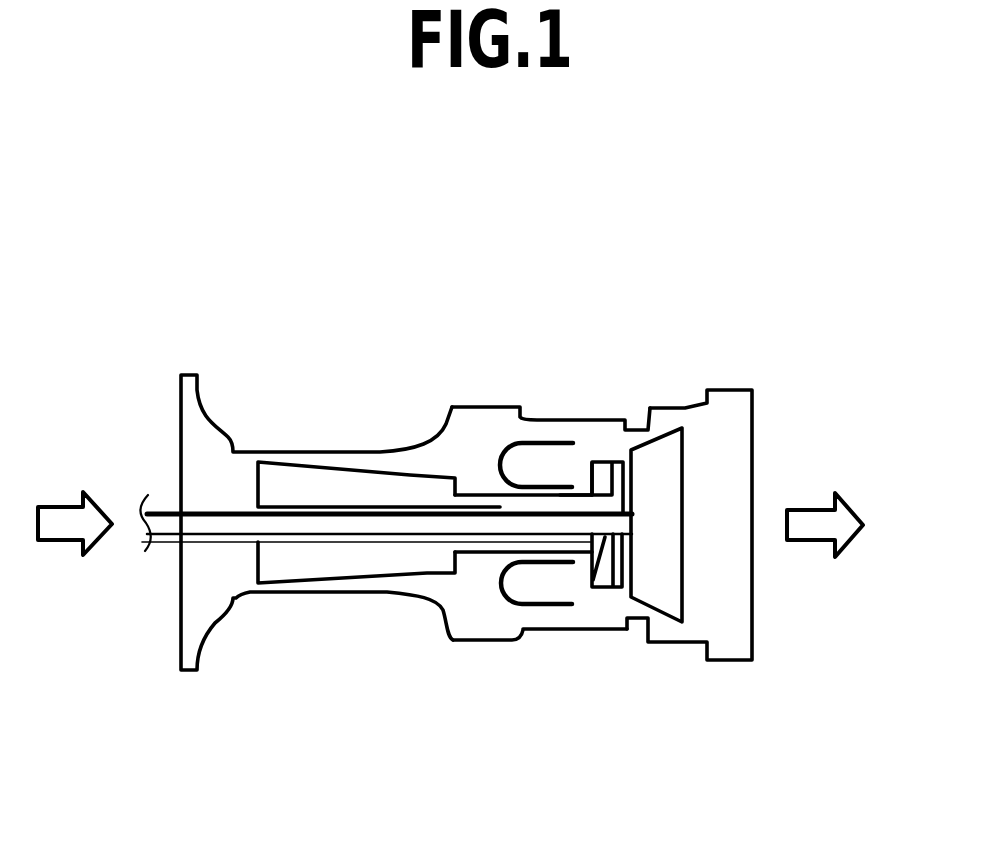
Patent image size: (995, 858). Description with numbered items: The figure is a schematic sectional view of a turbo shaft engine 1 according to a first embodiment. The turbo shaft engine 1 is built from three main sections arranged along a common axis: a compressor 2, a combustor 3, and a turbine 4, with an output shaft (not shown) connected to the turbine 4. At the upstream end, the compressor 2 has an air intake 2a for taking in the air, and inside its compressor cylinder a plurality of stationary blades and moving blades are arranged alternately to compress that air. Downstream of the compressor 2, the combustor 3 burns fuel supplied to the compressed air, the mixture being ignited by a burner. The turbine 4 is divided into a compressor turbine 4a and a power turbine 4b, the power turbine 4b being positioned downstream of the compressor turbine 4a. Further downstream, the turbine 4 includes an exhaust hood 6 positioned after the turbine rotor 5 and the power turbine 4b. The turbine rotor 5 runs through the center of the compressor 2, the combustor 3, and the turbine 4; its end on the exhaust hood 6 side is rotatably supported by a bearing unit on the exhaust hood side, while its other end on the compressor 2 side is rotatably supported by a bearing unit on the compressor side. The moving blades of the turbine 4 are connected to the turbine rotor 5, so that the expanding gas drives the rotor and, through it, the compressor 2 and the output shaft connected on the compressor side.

The turbo shaft engine 1 is at (443, 168).
The compressor 2 is at (412, 474).
The air intake 2a is at (203, 462).
The combustor 3 is at (577, 462).
The turbine 4 is at (903, 742).
The compressor turbine 4a is at (603, 489).
The power turbine 4b is at (657, 572).
The turbine rotor 5 is at (598, 580).
The exhaust hood 6 is at (730, 560).